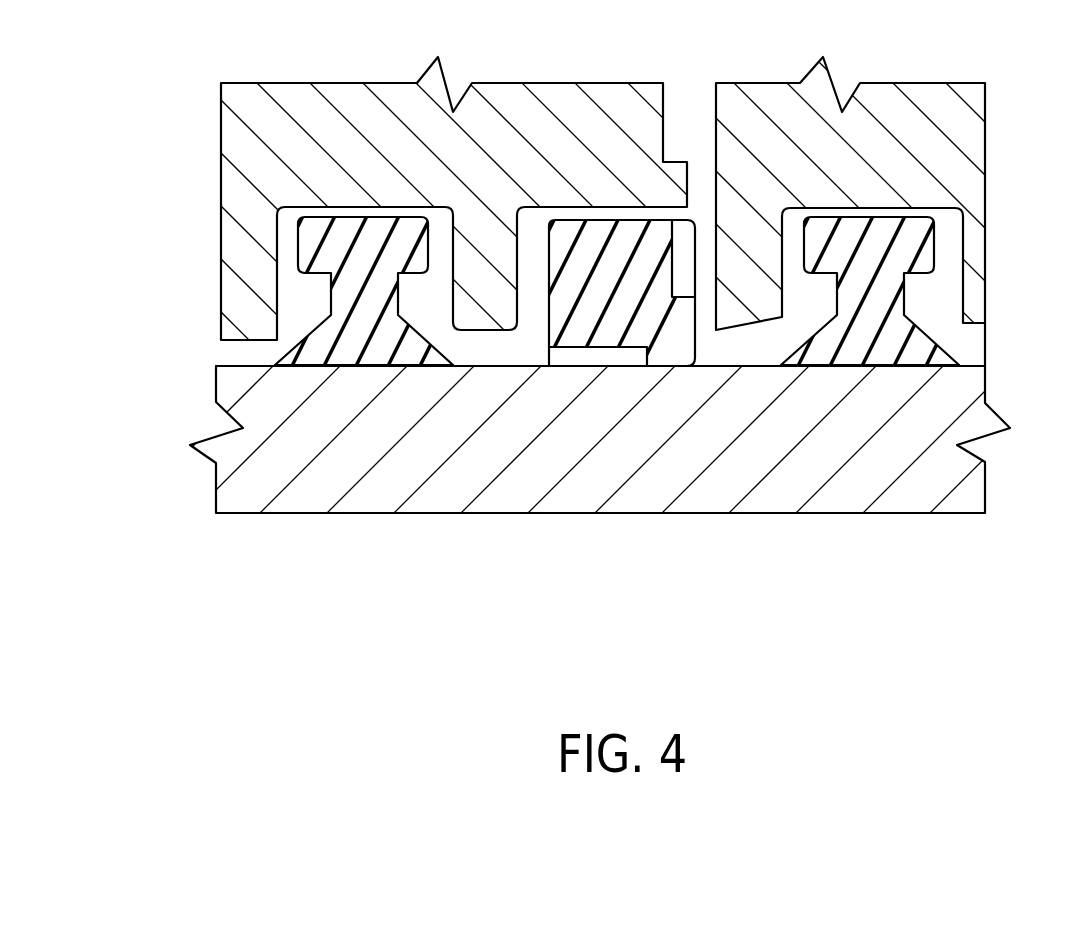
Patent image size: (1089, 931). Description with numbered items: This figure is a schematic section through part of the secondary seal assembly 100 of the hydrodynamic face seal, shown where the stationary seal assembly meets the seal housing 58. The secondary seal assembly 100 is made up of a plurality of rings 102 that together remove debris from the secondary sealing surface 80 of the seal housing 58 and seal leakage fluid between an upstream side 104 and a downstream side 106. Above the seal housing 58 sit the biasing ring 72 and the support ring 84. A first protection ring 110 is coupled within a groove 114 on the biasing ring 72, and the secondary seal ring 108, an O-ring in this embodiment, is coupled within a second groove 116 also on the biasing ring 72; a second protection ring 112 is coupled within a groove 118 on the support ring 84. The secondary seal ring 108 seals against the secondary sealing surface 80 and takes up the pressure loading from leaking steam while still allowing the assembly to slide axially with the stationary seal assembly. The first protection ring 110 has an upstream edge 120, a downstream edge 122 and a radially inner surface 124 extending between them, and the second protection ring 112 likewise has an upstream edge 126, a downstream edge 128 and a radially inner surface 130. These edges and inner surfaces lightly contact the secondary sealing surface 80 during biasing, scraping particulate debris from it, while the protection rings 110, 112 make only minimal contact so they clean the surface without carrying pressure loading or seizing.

The seal housing 58 is at (228, 388).
The biasing ring 72 is at (389, 169).
The secondary sealing surface 80 is at (226, 366).
The support ring 84 is at (860, 169).
The secondary seal assembly 100 is at (198, 283).
The rings 102 is at (608, 560).
The upstream side 104 is at (258, 681).
The downstream side 106 is at (1041, 681).
The secondary seal ring 108 is at (668, 348).
The first protection ring 110 is at (347, 335).
The second protection ring 112 is at (880, 366).
The groove 114 is at (430, 288).
The second groove 116 is at (535, 307).
The groove 118 is at (938, 303).
The upstream edge 120 is at (282, 363).
The downstream edge 122 is at (440, 360).
The radially inner surface 124 is at (367, 366).
The upstream edge 126 is at (786, 362).
The downstream edge 128 is at (945, 358).
The radially inner surface 130 is at (852, 335).